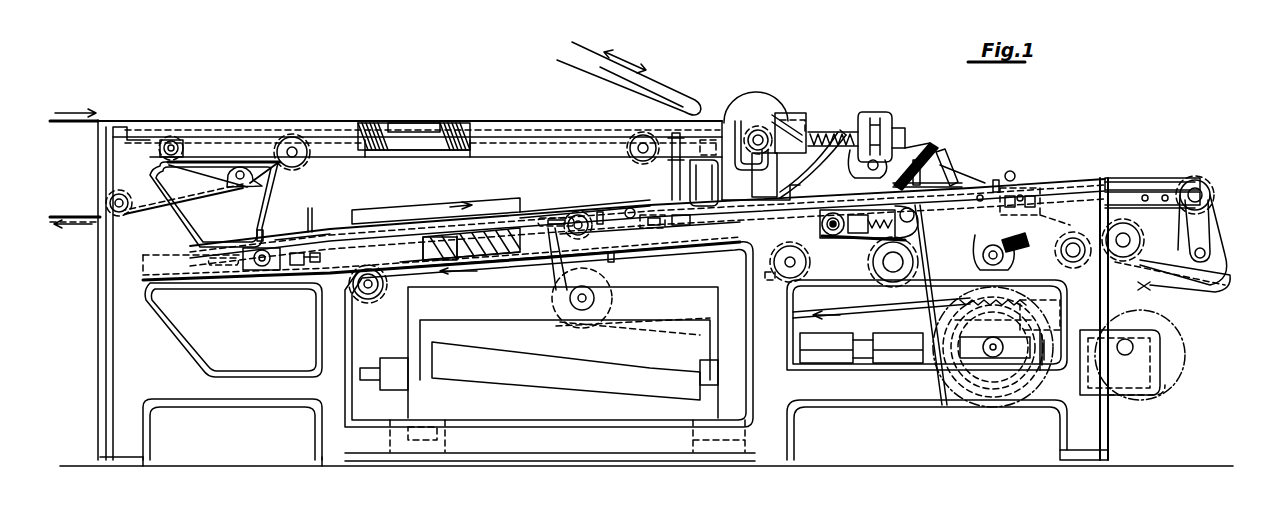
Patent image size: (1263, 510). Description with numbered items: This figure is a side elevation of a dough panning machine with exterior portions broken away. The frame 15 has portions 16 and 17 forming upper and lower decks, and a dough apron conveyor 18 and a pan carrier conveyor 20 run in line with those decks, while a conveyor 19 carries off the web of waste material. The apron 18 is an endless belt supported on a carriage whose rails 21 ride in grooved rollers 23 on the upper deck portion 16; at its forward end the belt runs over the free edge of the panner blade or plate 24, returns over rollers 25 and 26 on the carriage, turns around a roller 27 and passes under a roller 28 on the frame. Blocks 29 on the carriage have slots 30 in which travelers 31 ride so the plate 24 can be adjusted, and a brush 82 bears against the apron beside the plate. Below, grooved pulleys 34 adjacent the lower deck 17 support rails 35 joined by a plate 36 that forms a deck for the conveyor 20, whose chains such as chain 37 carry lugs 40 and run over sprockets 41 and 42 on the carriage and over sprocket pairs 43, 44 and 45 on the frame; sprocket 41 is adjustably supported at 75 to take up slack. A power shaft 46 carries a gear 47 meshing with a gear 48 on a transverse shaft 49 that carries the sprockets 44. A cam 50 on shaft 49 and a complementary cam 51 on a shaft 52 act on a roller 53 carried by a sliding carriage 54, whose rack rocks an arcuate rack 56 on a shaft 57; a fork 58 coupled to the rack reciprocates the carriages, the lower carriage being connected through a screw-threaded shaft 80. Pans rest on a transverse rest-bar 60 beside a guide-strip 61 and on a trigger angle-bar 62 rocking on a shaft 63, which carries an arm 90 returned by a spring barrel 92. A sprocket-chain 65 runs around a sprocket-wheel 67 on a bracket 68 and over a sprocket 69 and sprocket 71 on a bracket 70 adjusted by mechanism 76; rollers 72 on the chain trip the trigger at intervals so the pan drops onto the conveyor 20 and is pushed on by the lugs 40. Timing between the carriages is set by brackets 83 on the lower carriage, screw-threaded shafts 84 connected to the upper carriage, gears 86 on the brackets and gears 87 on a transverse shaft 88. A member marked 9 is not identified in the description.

The link rod 9 is at (931, 305).
The frame 15 is at (227, 311).
The upper deck portion 16 is at (405, 150).
The lower deck portion 17 is at (417, 262).
The conveyor 18 is at (100, 118).
The conveyor 19 is at (585, 44).
The conveyor 20 is at (288, 240).
The rails 21 is at (376, 124).
The rollers 23 is at (300, 158).
The panner blade 24 is at (950, 168).
The roller 25 is at (758, 160).
The roller 26 is at (175, 160).
The roller 27 is at (246, 188).
The roller 28 is at (112, 192).
The blocks 29 is at (757, 100).
The slots 30 is at (770, 128).
The travelers 31 is at (798, 130).
The grooved pulleys 34 is at (372, 300).
The rails 35 is at (497, 255).
The plate 36 is at (459, 262).
The chain 37 is at (518, 216).
The lugs 40 is at (258, 238).
The sprockets 41 is at (258, 266).
The sprockets 42 is at (1228, 178).
The sprockets 43 is at (1055, 237).
The sprockets 44 is at (985, 410).
The sprockets 45 is at (885, 282).
The power shaft 46 is at (864, 345).
The gear 47 is at (945, 360).
The gear 48 is at (958, 400).
The shaft 49 is at (997, 336).
The cam 50 is at (1010, 395).
The cam 51 is at (1168, 392).
The shaft 52 is at (1135, 347).
The roller 53 is at (1068, 385).
The carriage 54 is at (1142, 398).
The arcuate rack 56 is at (975, 258).
The shaft 57 is at (1000, 245).
The fork 58 is at (1020, 190).
The rest-bar 60 is at (322, 230).
The guide-strip 61 is at (480, 206).
The angle-bar 62 is at (660, 200).
The shaft 63 is at (680, 140).
The sprocket-chain 65 is at (665, 318).
The sprocket-wheel 67 is at (1215, 282).
The bracket 68 is at (1196, 231).
The sprocket 69 is at (606, 300).
The bracket 70 is at (555, 276).
The sprocket 71 is at (573, 214).
The rollers 72 is at (633, 208).
The adjustable support 75 is at (302, 270).
The adjusting mechanism 76 is at (672, 240).
The shaft 80 is at (866, 238).
The brush 82 is at (940, 148).
The brackets 83 is at (800, 175).
The screw-threaded shafts 84 is at (828, 134).
The gears 86 is at (878, 120).
The gears 87 is at (870, 165).
The shaft 88 is at (890, 166).
The arm 90 is at (702, 208).
The spring barrel 92 is at (596, 200).